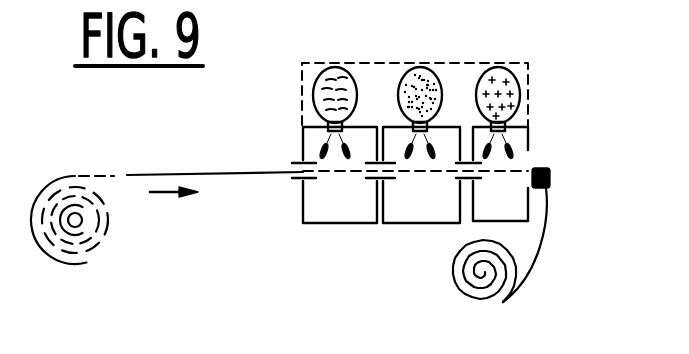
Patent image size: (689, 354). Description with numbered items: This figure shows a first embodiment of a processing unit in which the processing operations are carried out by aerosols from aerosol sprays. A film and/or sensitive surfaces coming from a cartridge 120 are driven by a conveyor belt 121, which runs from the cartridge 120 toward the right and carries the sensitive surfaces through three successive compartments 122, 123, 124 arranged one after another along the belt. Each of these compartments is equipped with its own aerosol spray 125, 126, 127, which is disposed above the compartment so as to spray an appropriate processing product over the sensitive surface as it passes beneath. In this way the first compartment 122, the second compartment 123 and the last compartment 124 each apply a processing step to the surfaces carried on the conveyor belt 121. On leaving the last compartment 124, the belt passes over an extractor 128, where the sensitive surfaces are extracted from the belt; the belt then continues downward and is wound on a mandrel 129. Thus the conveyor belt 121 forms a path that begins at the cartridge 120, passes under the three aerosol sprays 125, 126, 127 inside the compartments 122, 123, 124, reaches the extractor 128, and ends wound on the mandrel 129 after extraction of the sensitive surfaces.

The cartridge 120 is at (97, 236).
The conveyor belt 121 is at (231, 171).
The first compartment 122 is at (316, 212).
The second compartment 123 is at (405, 205).
The last compartment 124 is at (512, 202).
The aerosol spray 125 is at (340, 66).
The aerosol spray 126 is at (424, 66).
The aerosol spray 127 is at (500, 65).
The extractor 128 is at (548, 162).
The mandrel 129 is at (480, 276).